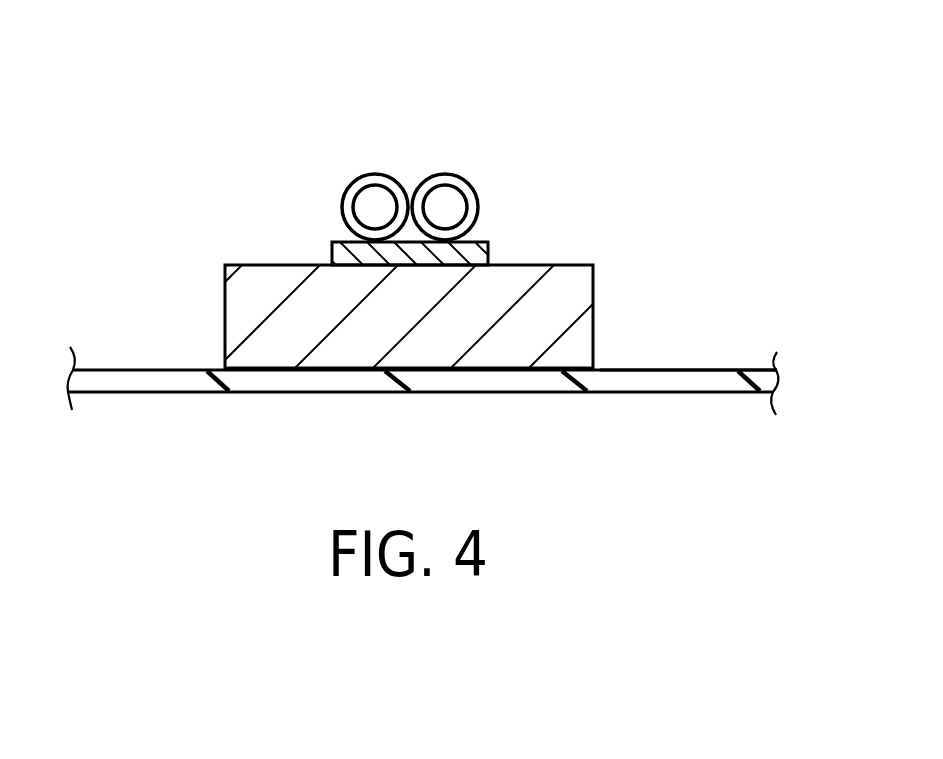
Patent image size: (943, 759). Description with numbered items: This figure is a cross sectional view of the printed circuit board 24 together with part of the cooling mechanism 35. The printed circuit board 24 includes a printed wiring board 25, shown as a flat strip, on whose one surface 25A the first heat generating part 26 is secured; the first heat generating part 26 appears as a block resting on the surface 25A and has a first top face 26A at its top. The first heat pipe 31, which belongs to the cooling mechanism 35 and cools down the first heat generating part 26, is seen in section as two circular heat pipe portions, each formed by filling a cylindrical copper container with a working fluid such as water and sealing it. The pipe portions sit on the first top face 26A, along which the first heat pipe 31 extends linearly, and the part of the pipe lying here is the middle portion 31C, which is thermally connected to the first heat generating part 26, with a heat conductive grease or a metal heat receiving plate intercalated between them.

The printed circuit board 24 is at (572, 120).
The printed wiring board 25 is at (673, 383).
The one surface of the printed wiring board 25A is at (717, 370).
The first heat generating part 26 is at (433, 353).
The first top face 26A is at (477, 243).
The first heat pipe 31 is at (448, 175).
The middle portion 31C is at (342, 213).
The cooling mechanism 35 is at (281, 116).